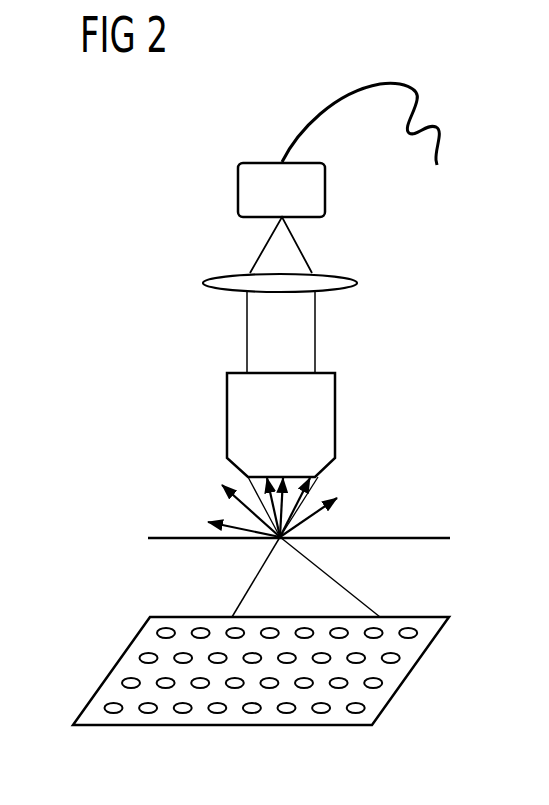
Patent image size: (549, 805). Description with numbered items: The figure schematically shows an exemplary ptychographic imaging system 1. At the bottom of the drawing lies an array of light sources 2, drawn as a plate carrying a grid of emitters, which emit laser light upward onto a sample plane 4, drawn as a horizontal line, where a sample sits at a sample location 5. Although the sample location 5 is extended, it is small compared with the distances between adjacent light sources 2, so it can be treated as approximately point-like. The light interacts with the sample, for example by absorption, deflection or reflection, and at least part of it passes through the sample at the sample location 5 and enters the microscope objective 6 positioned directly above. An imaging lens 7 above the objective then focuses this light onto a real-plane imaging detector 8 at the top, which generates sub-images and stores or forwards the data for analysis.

The ptychographic imaging system 1 is at (128, 204).
The array of light sources 2 is at (428, 632).
The sample plane 4 is at (412, 538).
The sample location 5 is at (281, 539).
The microscope objective 6 is at (335, 398).
The imaging lens 7 is at (340, 283).
The real-plane imaging detector 8 is at (325, 185).